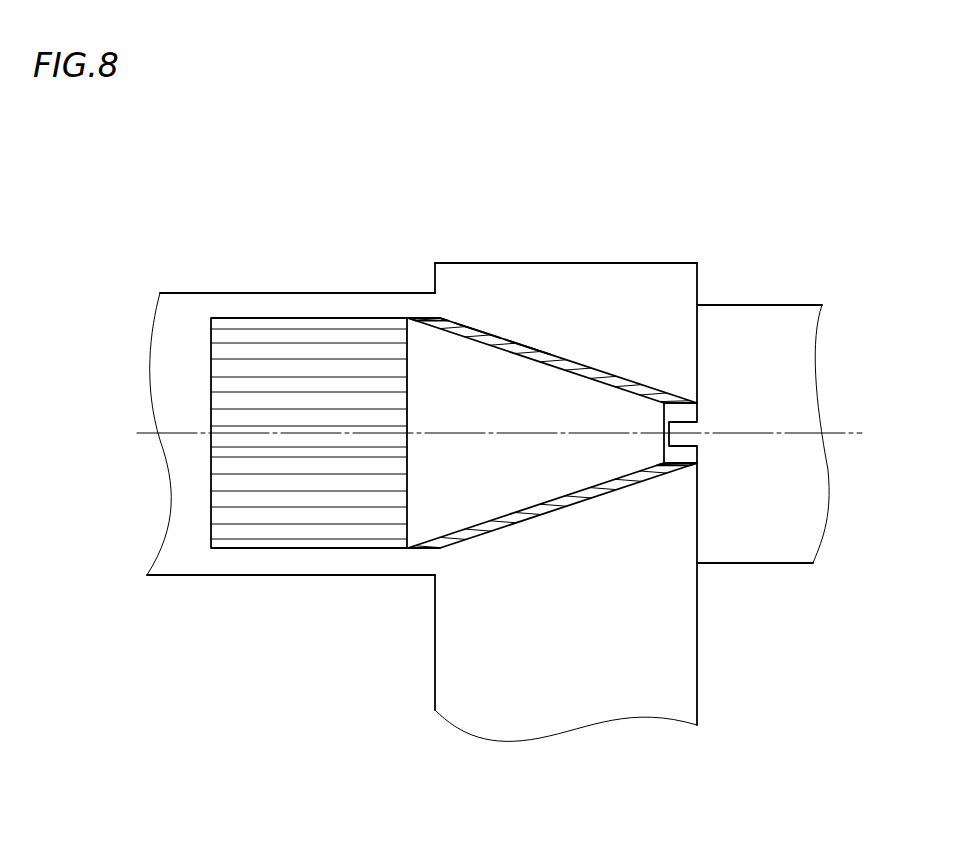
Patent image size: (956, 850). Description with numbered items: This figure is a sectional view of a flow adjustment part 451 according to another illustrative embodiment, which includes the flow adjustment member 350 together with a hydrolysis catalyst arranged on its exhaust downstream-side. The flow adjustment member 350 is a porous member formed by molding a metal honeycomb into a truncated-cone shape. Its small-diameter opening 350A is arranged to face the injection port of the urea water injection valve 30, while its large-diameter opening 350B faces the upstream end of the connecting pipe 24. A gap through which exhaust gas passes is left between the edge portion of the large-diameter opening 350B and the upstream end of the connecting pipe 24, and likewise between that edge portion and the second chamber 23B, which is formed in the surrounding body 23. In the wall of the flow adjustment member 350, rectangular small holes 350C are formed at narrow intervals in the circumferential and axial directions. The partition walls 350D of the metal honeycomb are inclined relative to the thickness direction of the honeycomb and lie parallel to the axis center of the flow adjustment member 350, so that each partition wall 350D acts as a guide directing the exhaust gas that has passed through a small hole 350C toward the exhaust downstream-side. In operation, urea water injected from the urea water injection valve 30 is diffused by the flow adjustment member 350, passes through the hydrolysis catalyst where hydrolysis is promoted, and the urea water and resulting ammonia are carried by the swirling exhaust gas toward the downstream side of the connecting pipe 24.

The holder 23 is at (667, 258).
The second chamber 23B is at (620, 262).
The connecting pipe 24 is at (342, 575).
The urea water injection valve 30 is at (697, 406).
The flow adjustment member 350 is at (697, 404).
The small-diameter opening 350A is at (698, 461).
The large-diameter opening 350B is at (407, 331).
The small hole 350C is at (490, 334).
The partition wall 350D is at (540, 351).
The flow adjustment part 451 is at (410, 318).